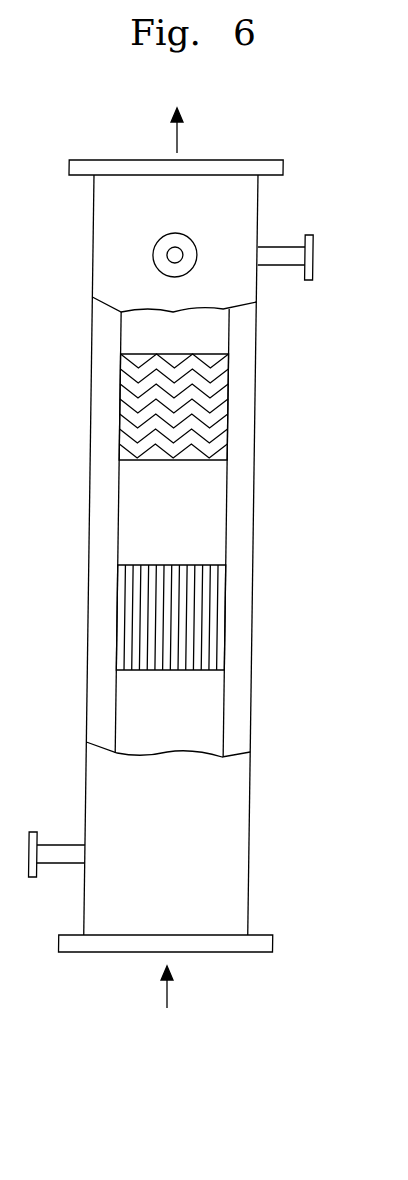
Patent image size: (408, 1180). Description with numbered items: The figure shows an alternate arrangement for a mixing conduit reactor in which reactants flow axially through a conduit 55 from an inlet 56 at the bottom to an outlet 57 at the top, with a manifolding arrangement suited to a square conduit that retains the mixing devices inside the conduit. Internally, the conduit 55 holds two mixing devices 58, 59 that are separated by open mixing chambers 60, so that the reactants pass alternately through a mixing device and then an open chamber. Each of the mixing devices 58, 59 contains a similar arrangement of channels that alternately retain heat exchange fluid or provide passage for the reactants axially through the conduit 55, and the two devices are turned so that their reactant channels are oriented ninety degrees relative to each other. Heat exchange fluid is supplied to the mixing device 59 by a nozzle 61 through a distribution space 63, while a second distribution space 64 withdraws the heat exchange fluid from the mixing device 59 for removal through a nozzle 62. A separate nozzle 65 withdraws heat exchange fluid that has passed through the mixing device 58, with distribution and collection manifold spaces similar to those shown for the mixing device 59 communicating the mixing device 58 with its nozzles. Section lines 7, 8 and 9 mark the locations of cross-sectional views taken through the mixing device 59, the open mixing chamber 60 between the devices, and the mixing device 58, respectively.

The conduit 55 is at (249, 806).
The inlet 56 is at (168, 990).
The outlet 57 is at (178, 131).
The mixing device 58 is at (199, 630).
The mixing device 59 is at (219, 417).
The open mixing chambers 60 is at (203, 328).
The nozzle 61 is at (53, 843).
The nozzle 62 is at (280, 247).
The distribution space 63 is at (100, 402).
The distribution space 64 is at (247, 330).
The nozzle 65 is at (167, 234).
The section line 7- 7 is at (62, 398).
The section line 8- 8 is at (60, 532).
The section line 9- 9 is at (60, 620).